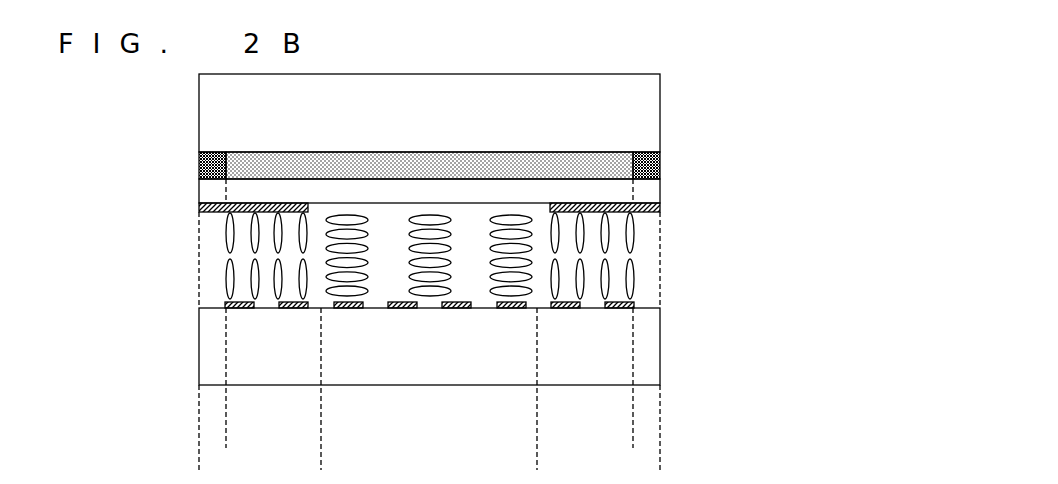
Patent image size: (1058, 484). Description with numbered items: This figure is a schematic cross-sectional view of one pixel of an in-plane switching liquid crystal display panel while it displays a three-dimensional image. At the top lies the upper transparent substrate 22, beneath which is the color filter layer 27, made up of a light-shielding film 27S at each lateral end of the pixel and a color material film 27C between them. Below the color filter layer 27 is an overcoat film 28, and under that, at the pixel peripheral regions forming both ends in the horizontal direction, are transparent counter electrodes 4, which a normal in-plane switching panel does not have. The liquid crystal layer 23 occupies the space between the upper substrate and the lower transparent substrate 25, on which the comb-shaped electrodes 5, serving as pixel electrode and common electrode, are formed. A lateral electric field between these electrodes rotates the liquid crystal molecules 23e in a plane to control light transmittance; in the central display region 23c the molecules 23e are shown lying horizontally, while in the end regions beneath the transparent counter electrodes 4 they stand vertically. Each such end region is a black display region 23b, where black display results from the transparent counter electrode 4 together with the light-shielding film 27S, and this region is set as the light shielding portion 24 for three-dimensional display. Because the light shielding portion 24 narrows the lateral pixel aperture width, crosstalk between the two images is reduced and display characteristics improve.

The transparent substrate 22 is at (646, 98).
The color filter layer 27 is at (486, 143).
The color material film 27C is at (600, 158).
The light-shielding film 27S is at (660, 165).
The overcoat film 28 is at (648, 190).
The transparent counter electrode 4 is at (660, 208).
The liquid crystal layer 23 is at (441, 259).
The liquid crystal molecule 23e is at (630, 275).
The comb-shaped electrode 5 is at (622, 305).
The transparent substrate 25 is at (646, 358).
The black display region 23b is at (633, 423).
The display region 23c is at (321, 423).
The light shielding portion 24 is at (660, 460).